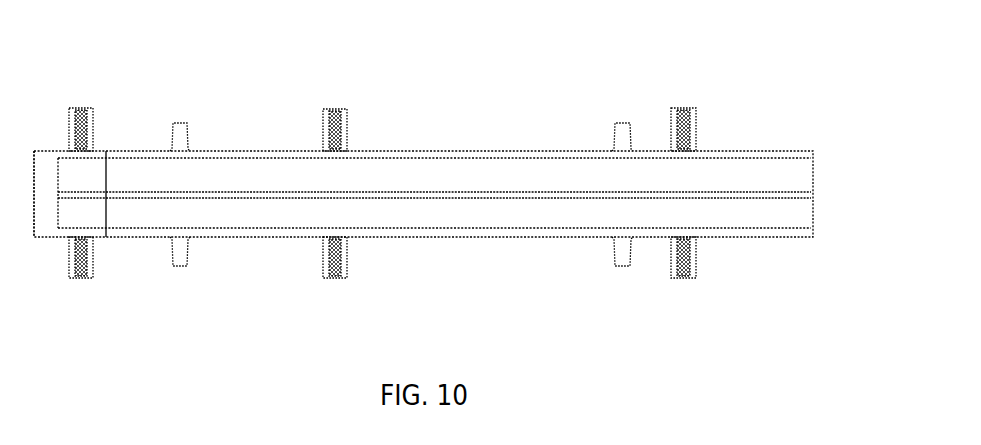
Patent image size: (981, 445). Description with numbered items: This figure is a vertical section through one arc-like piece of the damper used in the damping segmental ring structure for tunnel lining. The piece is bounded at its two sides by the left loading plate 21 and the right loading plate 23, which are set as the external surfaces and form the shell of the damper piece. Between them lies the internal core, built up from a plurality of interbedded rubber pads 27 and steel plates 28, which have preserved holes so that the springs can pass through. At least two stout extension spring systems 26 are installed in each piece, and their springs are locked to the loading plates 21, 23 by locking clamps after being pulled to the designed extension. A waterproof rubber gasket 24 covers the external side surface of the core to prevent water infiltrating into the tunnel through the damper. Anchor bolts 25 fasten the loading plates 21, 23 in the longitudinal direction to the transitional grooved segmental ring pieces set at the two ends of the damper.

The left loading plate of the damper 21 is at (235, 237).
The right loading plate of the damper 23 is at (431, 151).
The waterproof rubber gasket 24 is at (50, 215).
The anchor bolts 25 is at (683, 278).
The spring system of the damper 26 is at (623, 123).
The rubber pads 27 is at (267, 183).
The steel plates 28 is at (447, 227).